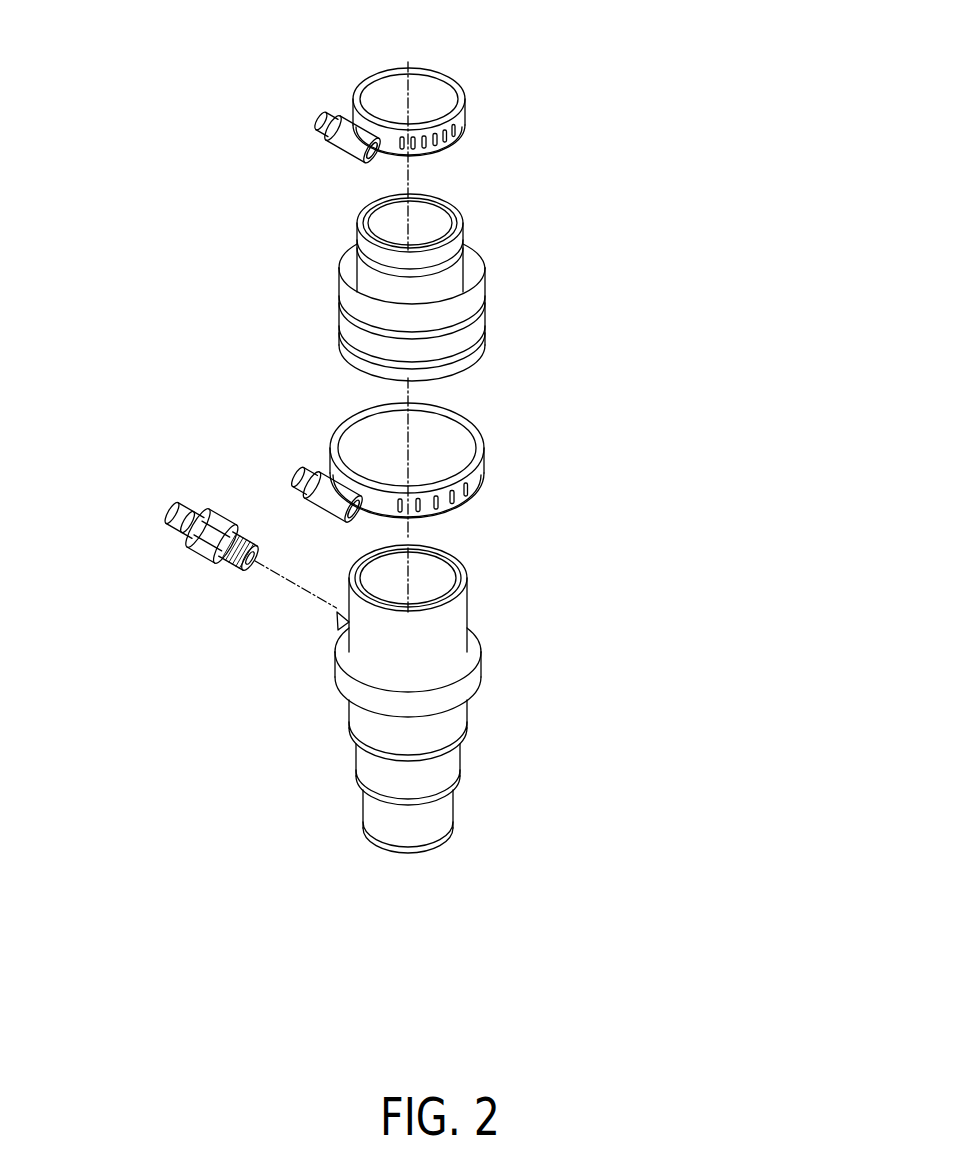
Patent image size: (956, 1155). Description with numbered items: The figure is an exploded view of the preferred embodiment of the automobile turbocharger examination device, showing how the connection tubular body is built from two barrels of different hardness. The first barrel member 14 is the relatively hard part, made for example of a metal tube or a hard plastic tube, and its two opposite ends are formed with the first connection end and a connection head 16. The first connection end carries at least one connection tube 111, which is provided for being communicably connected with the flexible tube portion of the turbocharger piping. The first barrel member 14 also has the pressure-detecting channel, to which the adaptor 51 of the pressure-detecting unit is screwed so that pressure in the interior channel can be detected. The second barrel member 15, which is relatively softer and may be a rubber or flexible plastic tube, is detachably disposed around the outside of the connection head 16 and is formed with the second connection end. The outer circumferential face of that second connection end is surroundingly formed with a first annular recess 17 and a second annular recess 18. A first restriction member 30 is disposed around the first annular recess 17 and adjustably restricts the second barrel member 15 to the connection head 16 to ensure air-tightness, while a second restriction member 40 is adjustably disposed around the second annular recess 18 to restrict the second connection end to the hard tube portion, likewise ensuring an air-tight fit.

The first barrel member 14 is at (390, 695).
The second barrel member 15 is at (483, 254).
The connection head 16 is at (447, 632).
The first annular recess 17 is at (460, 340).
The second annular recess 18 is at (453, 273).
The first restriction member 30 is at (337, 444).
The second restriction member 40 is at (455, 92).
The adaptor 51 is at (203, 537).
The connection tube 111 is at (428, 818).